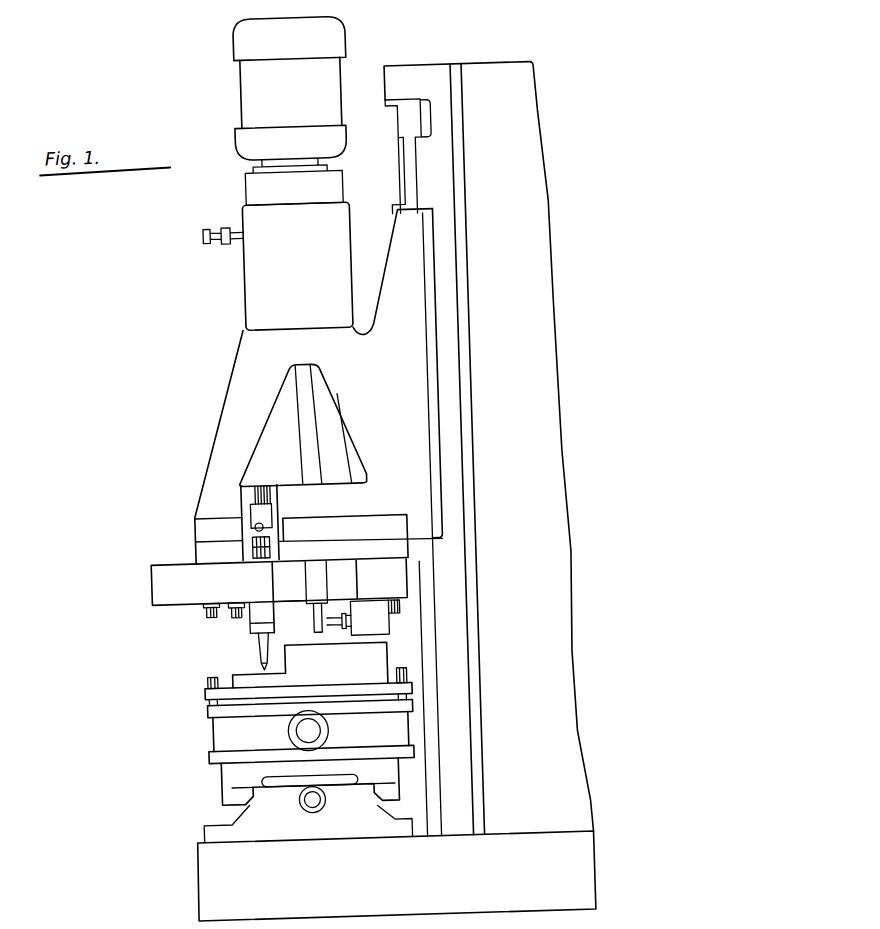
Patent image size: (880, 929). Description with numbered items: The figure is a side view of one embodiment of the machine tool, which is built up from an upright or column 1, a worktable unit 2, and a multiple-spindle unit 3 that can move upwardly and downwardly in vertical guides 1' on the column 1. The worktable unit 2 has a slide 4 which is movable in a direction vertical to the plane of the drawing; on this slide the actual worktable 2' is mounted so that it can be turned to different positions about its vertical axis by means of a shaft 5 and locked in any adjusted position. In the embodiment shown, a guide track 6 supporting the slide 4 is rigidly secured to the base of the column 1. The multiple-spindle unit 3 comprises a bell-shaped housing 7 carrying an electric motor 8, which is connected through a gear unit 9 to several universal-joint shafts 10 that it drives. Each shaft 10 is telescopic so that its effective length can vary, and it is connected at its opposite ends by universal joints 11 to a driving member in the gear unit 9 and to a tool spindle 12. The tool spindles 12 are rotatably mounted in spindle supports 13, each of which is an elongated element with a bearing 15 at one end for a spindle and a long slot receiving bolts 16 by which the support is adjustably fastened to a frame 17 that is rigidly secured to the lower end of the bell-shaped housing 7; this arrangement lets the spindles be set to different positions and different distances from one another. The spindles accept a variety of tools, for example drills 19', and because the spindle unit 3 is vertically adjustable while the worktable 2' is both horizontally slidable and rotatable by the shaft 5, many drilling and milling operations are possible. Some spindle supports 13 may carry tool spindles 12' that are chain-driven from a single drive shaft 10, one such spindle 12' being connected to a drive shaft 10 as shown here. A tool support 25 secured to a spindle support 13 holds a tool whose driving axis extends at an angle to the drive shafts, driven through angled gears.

The column 1 is at (368, 491).
The vertical guides 1' is at (384, 151).
The worktable unit 2 is at (296, 703).
The worktable 2' is at (336, 731).
The multiple-spindle unit 3 is at (297, 387).
The slide 4 is at (291, 814).
The shaft 5 is at (292, 729).
The guide track 6 is at (288, 826).
The bell-shaped housing 7 is at (219, 405).
The electric motor 8 is at (326, 26).
The gear unit 9 is at (247, 219).
The universal-joint shafts 10 is at (298, 458).
The universal joints 11 is at (238, 522).
The tool spindle 12 is at (280, 615).
The tool spindles 12' is at (213, 548).
The spindle support 13 is at (384, 575).
The bearing 15 is at (249, 587).
The bolts 16 is at (216, 611).
The frame 17 is at (357, 546).
The drills 19' is at (301, 623).
The tool support 25 is at (380, 616).